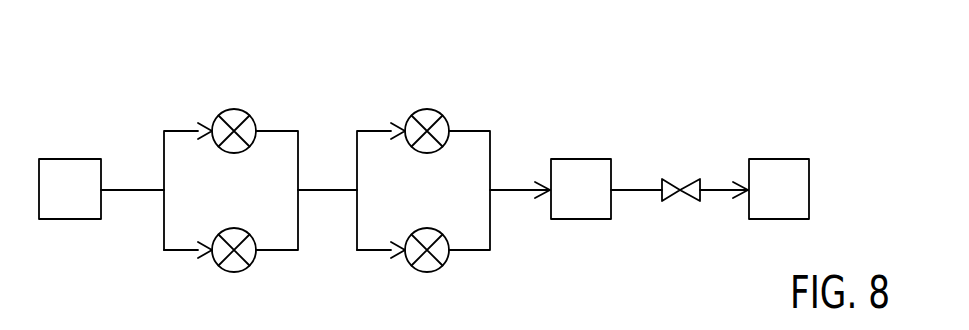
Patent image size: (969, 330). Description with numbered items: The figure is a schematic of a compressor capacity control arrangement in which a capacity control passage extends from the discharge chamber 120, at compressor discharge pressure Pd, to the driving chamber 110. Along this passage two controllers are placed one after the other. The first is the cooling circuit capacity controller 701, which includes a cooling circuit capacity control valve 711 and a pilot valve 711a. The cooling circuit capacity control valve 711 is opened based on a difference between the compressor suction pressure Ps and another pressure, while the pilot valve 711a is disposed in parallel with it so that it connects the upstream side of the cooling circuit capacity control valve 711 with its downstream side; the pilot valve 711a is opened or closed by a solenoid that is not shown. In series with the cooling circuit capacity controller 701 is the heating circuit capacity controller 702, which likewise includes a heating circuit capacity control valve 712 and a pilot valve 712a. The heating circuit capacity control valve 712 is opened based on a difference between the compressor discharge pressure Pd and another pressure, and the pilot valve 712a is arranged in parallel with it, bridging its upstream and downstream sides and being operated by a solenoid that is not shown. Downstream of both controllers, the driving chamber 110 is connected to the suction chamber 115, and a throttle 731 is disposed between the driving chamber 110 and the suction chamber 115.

The discharge chamber 120 is at (73, 158).
The cooling circuit capacity controller 701 is at (275, 100).
The cooling circuit capacity control valve 711 is at (233, 109).
The pilot valve 711a is at (243, 271).
The heating circuit capacity controller 702 is at (490, 107).
The heating circuit capacity control valve 712 is at (430, 109).
The pilot valve 712a is at (436, 271).
The driving chamber 110 is at (583, 159).
The throttle 731 is at (705, 178).
The suction chamber 115 is at (780, 159).